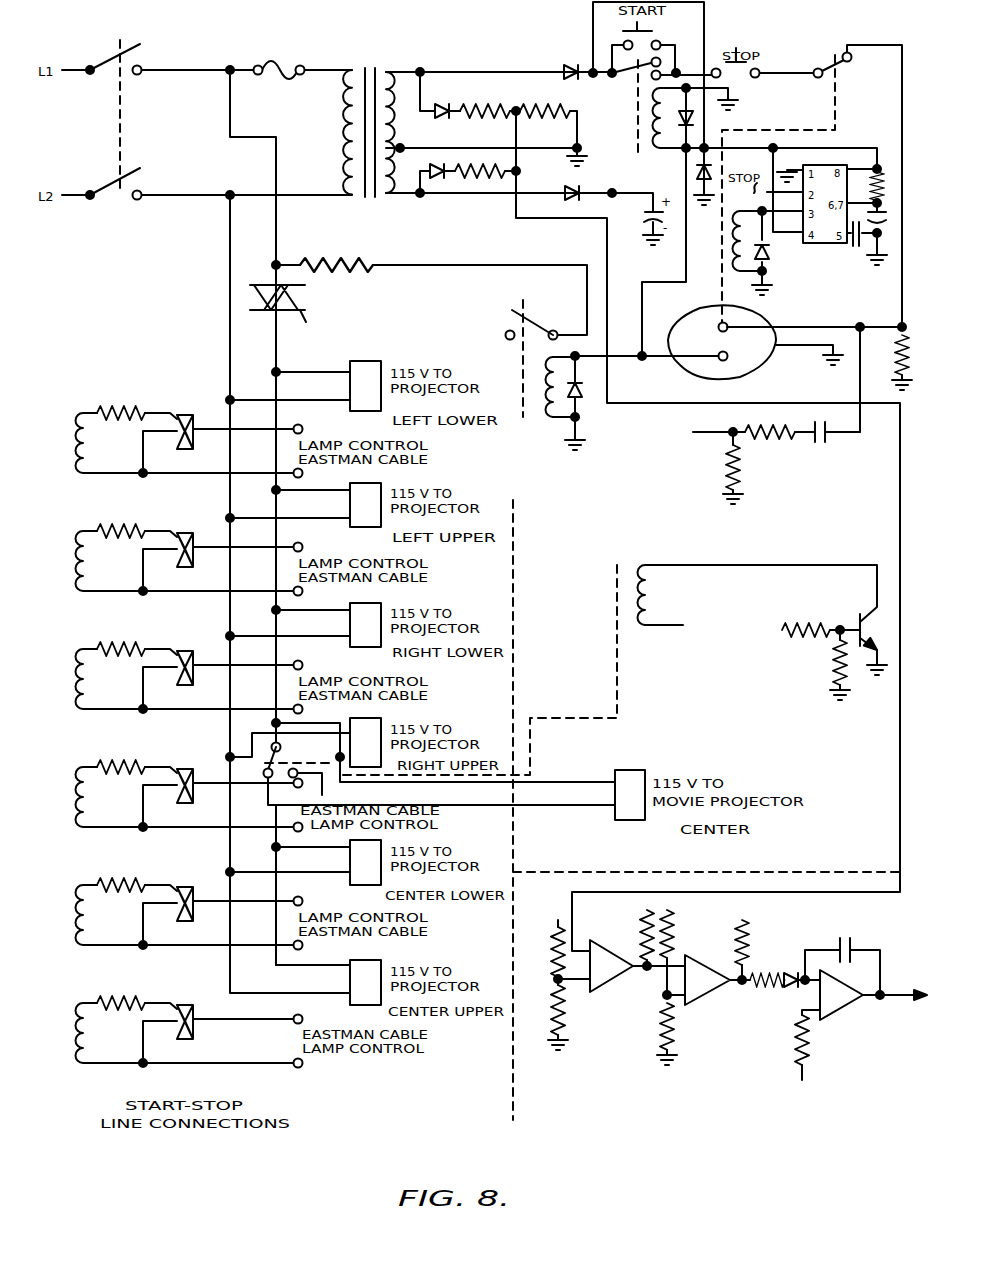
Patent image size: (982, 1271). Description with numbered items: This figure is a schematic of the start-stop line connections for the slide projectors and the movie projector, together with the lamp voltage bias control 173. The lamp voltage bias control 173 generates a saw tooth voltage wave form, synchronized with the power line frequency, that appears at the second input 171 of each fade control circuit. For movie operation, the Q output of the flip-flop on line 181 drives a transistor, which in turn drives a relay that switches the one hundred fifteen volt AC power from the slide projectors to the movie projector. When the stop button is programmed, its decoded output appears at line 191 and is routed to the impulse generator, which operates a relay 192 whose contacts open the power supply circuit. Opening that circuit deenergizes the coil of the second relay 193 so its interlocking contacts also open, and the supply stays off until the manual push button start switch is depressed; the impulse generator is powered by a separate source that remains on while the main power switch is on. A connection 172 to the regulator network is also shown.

The second input 171 is at (913, 1007).
The connection to FIG. 6 network 172 is at (686, 451).
The lamp voltage bias control 173 is at (607, 1050).
The line 181 is at (766, 630).
The line 191 is at (764, 194).
The relay 192 is at (714, 262).
The second relay 193 is at (656, 154).